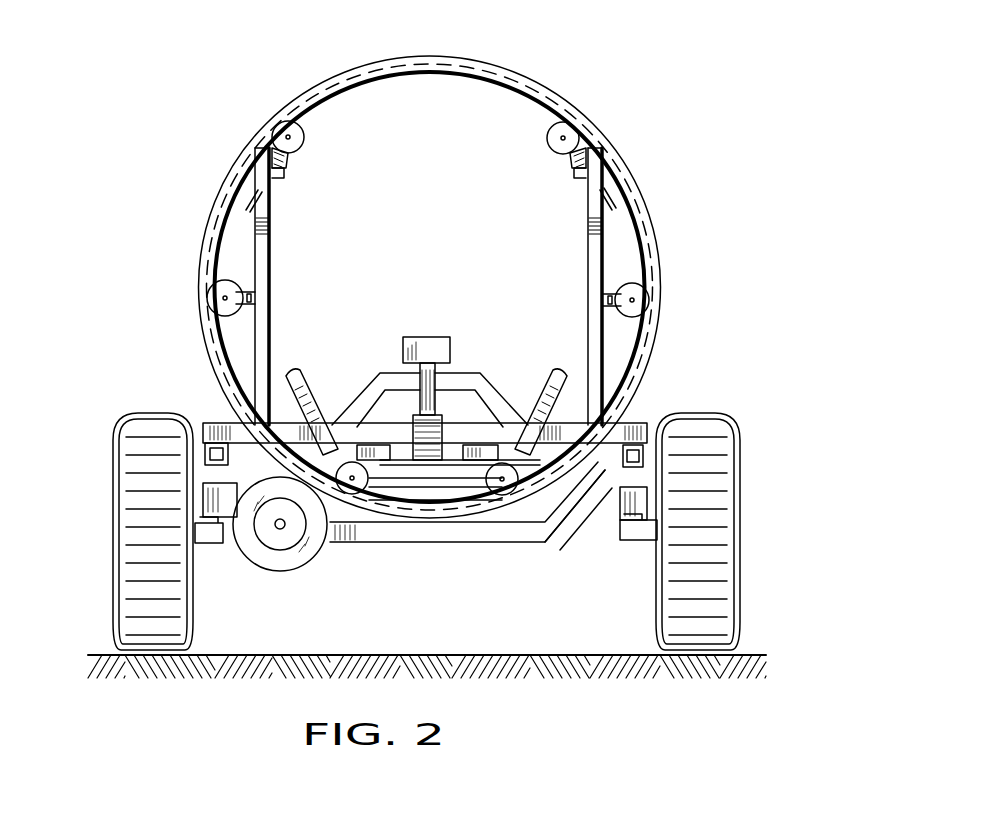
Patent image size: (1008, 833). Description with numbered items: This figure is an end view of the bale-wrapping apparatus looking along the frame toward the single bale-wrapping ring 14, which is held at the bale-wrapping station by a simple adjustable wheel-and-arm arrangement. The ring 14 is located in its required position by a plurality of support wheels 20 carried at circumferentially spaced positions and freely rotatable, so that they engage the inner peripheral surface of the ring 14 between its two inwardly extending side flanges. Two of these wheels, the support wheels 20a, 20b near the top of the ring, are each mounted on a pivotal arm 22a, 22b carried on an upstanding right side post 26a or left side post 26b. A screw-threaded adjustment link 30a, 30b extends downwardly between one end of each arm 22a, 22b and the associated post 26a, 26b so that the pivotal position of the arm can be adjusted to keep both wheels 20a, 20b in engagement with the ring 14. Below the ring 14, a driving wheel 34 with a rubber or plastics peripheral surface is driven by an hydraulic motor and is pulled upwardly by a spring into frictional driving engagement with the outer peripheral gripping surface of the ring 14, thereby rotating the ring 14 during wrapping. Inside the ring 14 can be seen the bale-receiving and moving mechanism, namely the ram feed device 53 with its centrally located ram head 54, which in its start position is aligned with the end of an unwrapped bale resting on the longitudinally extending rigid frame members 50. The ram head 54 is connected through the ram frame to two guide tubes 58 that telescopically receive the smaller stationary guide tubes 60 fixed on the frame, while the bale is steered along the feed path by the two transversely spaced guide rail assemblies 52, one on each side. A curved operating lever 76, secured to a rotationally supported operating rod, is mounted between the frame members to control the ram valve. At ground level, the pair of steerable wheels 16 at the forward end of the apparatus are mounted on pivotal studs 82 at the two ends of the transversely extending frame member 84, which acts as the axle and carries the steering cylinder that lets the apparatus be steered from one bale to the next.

The bale-wrapping ring 14 is at (662, 233).
The steerable wheels 16 is at (720, 502).
The support wheels 20 is at (214, 288).
The support wheel 20a is at (551, 125).
The support wheel 20b is at (302, 124).
The pivotal arm 22a is at (571, 160).
The pivotal arm 22b is at (289, 160).
The right side post 26a is at (600, 218).
The left side post 26b is at (256, 218).
The screw-threaded adjustment link 30a is at (584, 178).
The screw-threaded adjustment link 30b is at (288, 178).
The driving wheel 34 is at (296, 556).
The rigid frame members 50 is at (377, 440).
The guide rail assemblies 52 is at (296, 372).
The ram feed device 53 is at (378, 346).
The ram head 54 is at (430, 338).
The guide tubes 58 is at (650, 472).
The guide tubes 60 is at (210, 443).
The curved operating lever 76 is at (458, 395).
The pivotal studs 82 is at (208, 545).
The transversely-extending frame member 84 is at (580, 510).